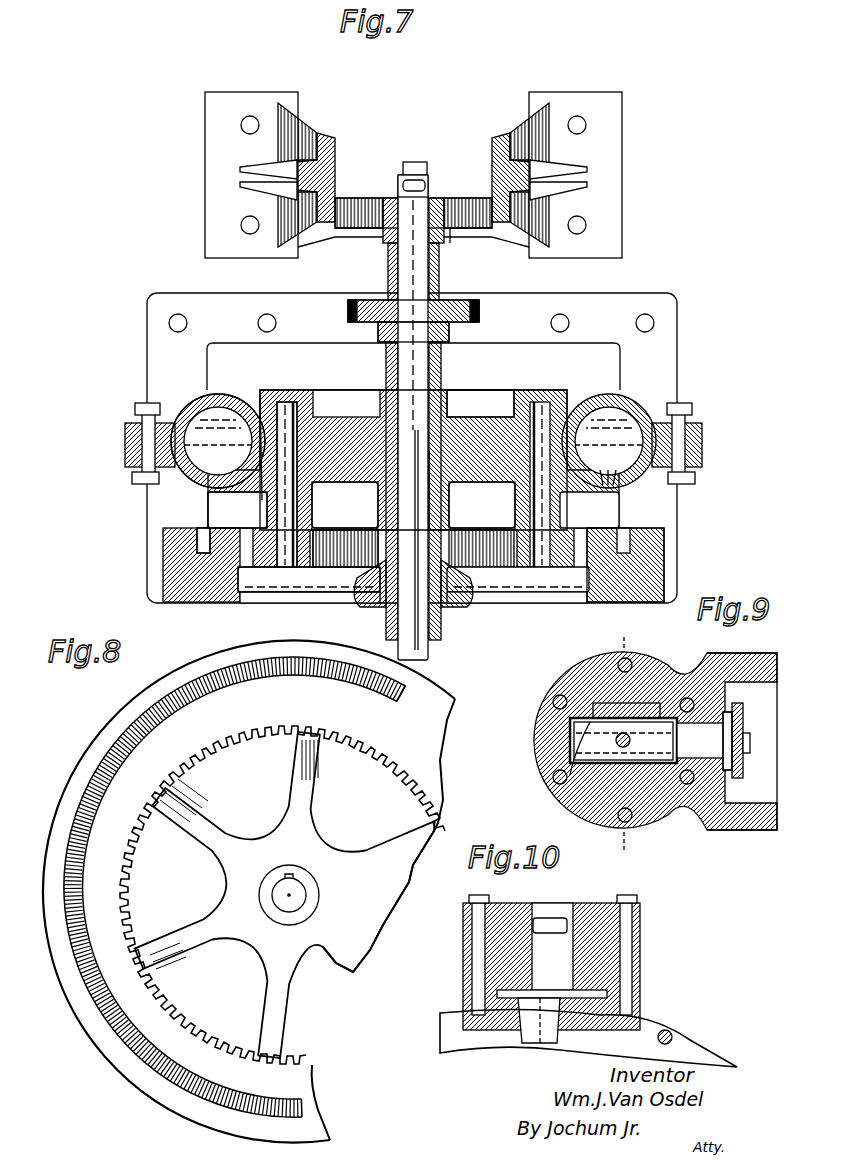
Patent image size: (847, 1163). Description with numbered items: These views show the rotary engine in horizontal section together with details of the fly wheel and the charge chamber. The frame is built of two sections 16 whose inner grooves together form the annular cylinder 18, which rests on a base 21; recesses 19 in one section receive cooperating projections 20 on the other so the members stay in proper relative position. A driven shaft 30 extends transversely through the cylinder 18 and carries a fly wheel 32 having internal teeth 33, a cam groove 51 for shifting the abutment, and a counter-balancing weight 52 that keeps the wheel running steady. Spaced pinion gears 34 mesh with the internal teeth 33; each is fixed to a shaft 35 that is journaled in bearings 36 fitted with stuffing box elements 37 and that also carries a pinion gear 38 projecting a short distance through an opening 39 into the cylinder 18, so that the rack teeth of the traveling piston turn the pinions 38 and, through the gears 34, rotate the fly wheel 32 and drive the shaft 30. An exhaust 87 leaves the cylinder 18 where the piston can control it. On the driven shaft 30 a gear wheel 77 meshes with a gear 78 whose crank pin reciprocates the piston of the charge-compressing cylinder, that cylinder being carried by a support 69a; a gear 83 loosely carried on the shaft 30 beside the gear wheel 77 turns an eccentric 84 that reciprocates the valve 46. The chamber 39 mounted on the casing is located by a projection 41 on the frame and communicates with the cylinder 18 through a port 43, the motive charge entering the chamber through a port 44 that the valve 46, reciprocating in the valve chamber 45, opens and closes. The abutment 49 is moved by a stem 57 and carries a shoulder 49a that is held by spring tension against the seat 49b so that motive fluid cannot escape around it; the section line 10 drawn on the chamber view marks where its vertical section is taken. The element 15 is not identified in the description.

In FIG. 7, the support 69a is at (515, 135).
In FIG. 7, the gear 78 is at (362, 205).
In FIG. 7, the gear wheel 77 is at (443, 237).
In FIG. 7, the gear 83 is at (347, 311).
In FIG. 7, the eccentric 84 is at (448, 338).
In FIG. 7, the base 21 is at (582, 350).
In FIG. 7, the annular chamber or cylinder 18 is at (205, 430).
In FIG. 7, the chamber 39 is at (262, 432).
In FIG. 9, the chamber 39 is at (585, 680).
In FIG. 7, the shaft 35 is at (297, 405).
In FIG. 7, the body 15 is at (350, 415).
In FIG. 10, the body 15 is at (700, 1040).
In FIG. 7, the recesses 19 is at (450, 460).
In FIG. 7, the pinion gear 38 is at (510, 440).
In FIG. 7, the exhaust 87 is at (604, 468).
In FIG. 7, the cam groove 51 is at (200, 535).
In FIG. 8, the cam groove 51 is at (274, 660).
In FIG. 7, the bearings 36 is at (260, 500).
In FIG. 7, the stuffing box elements 37 is at (314, 505).
In FIG. 7, the frame sections 16 is at (345, 535).
In FIG. 7, the projections 20 is at (482, 504).
In FIG. 7, the fly wheel 32 is at (664, 562).
In FIG. 8, the fly wheel 32 is at (100, 755).
In FIG. 7, the pinion gears 34 is at (310, 570).
In FIG. 7, the driven shaft 30 is at (428, 655).
In FIG. 8, the internal teeth 33 is at (282, 851).
In FIG. 8, the counter-balancing weight 52 is at (380, 855).
In FIG. 9, the port or passage 43 is at (660, 700).
In FIG. 10, the port or passage 43 is at (530, 1045).
In FIG. 9, the valve 46 is at (735, 718).
In FIG. 9, the valve chamber 45 is at (765, 748).
In FIG. 9, the abutment 49 is at (583, 740).
In FIG. 9, the shoulder 49a is at (575, 760).
In FIG. 9, the stem 57 is at (560, 785).
In FIG. 9, the port 44 is at (700, 745).
In FIG. 10, the port 44 is at (553, 925).
In FIG. 9, the section line 10 is at (640, 627).
In FIG. 10, the seat 49b is at (600, 965).
In FIG. 10, the projection 41 is at (607, 993).